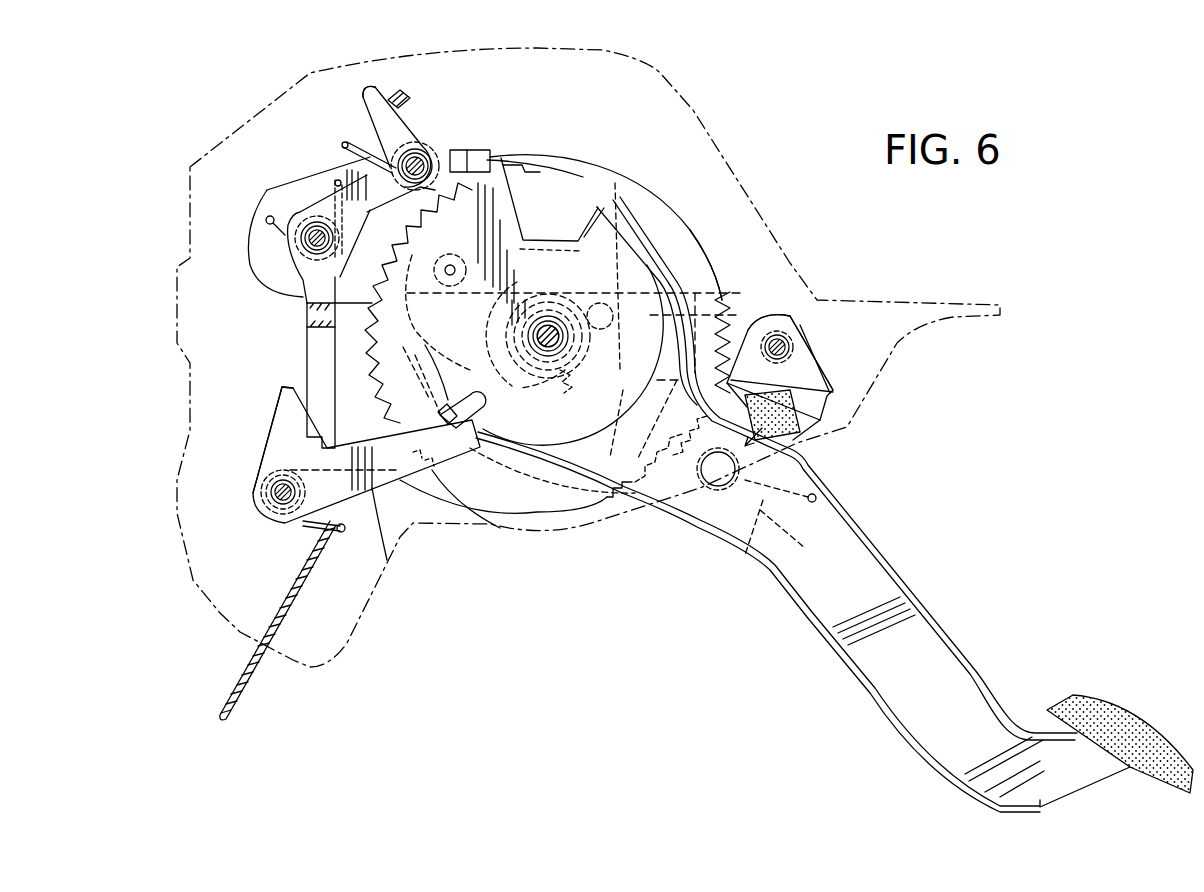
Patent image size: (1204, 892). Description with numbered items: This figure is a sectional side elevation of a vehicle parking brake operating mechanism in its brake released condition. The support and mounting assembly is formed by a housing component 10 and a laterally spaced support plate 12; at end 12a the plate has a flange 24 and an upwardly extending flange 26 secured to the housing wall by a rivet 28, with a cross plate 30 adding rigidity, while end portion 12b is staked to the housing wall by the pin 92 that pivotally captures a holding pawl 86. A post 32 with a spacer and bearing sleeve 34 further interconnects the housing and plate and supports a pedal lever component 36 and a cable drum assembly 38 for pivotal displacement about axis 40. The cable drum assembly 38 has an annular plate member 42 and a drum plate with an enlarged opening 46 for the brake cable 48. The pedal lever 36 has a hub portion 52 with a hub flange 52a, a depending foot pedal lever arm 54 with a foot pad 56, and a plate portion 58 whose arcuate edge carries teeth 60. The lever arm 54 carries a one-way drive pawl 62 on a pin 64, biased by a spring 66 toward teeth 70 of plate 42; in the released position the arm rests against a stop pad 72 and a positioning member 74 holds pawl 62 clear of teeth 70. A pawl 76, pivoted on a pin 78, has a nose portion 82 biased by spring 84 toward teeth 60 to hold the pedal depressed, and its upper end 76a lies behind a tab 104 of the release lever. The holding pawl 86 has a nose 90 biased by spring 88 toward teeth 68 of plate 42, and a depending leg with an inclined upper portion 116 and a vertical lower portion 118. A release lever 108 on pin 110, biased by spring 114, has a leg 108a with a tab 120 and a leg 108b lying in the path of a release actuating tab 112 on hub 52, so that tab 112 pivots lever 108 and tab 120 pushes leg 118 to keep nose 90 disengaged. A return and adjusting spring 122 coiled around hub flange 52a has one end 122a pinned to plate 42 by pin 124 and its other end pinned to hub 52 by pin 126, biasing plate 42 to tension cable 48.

The housing component 10 is at (708, 106).
The support plate 12 is at (544, 146).
The end of support plate 12a is at (752, 320).
The end portion of support plate 12b is at (250, 220).
The flange 24 is at (840, 393).
The upwardly extending flange 26 is at (800, 358).
The rivet 28 is at (787, 340).
The cross plate 30 is at (827, 367).
The post 32 is at (562, 325).
The spacer and bearing sleeve 34 is at (548, 330).
The pedal lever component 36 is at (905, 580).
The cable drum assembly 38 is at (683, 209).
The axis 40 is at (510, 327).
The annular plate member 42 is at (577, 175).
The enlarged opening 46 is at (437, 265).
The brake cable 48 is at (243, 688).
The hub portion 52 is at (513, 243).
The hub flange 52a is at (565, 370).
The foot pedal lever arm 54 is at (930, 667).
The foot pad 56 is at (1127, 723).
The plate portion 58 is at (510, 170).
The teeth 60 is at (500, 200).
The one-way drive pawl 62 is at (750, 545).
The pin 64 is at (718, 480).
The spring 66 is at (816, 493).
The teeth 68 is at (378, 262).
The teeth 70 is at (652, 500).
The stop pad 72 is at (833, 432).
The positioning member 74 is at (797, 453).
The pawl 76 is at (407, 125).
The upper end of pawl 76a is at (368, 100).
The pin 78 is at (420, 158).
The nose portion 82 is at (485, 157).
The biasing spring 84 is at (360, 145).
The holding pawl 86 is at (327, 203).
The biasing spring 88 is at (262, 252).
The nose 90 is at (412, 200).
The pin 92 is at (318, 248).
The tab 104 is at (397, 97).
The release lever 108 is at (252, 497).
The leg 108a is at (262, 449).
The leg 108b is at (380, 545).
The pin 110 is at (275, 500).
The release actuating tab 112 is at (485, 392).
The biasing spring 114 is at (310, 528).
The laterally inclined upper portion 116 is at (317, 313).
The vertical lower portion 118 is at (320, 370).
The tab 120 is at (282, 393).
The pedal lever return and cable drum adjusting spring 122 is at (553, 398).
The end of spring 122a is at (600, 318).
The pin 124 is at (606, 332).
The pin 126 is at (458, 262).